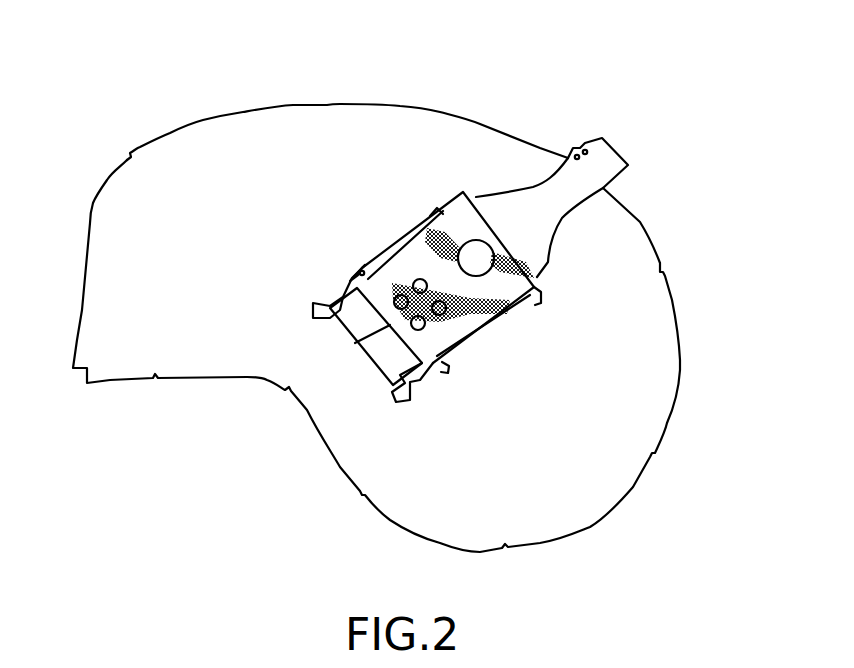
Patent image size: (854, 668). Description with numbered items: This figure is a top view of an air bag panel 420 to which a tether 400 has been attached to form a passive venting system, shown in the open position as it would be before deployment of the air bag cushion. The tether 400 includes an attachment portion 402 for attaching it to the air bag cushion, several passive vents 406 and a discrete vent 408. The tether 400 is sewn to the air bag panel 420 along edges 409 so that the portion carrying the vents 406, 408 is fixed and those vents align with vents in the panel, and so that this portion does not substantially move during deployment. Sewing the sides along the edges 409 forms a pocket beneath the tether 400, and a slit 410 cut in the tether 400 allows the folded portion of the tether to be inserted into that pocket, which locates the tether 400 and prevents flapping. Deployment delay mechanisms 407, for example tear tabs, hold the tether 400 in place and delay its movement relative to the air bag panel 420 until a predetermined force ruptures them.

The air bag panel 420 is at (212, 139).
The attachment portion 402 is at (607, 163).
The tether 400 is at (586, 250).
The passive vent 406 is at (395, 296).
The deployment delay mechanisms 407 is at (313, 311).
The discrete vent 408 is at (482, 264).
The edges 409 is at (417, 232).
The slit 410 is at (358, 340).